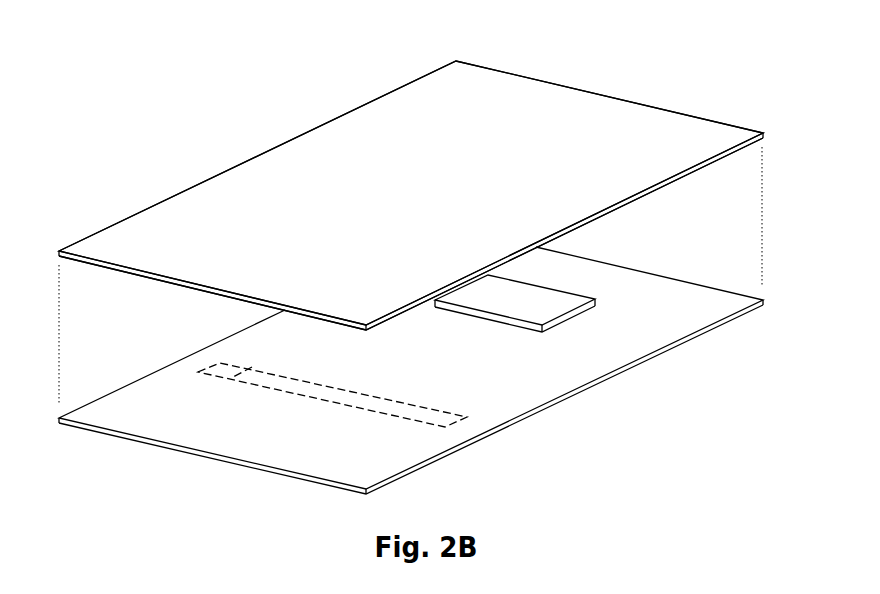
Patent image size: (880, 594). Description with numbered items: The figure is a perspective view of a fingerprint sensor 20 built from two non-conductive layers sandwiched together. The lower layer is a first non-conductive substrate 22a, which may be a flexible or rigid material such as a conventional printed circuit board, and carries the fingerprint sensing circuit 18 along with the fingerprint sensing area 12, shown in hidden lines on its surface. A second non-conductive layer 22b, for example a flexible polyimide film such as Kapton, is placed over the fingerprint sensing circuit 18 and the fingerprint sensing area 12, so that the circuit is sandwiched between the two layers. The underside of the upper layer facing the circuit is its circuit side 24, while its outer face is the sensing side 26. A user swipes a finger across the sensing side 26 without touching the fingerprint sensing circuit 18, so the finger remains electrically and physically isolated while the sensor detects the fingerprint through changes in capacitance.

The fingerprint sensor 20 is at (411, 266).
The second non-conductive layer 22b is at (147, 228).
The first non-conductive substrate 22a is at (137, 395).
The circuit side 24 is at (188, 292).
The sensing side 26 is at (253, 264).
The fingerprint sensing circuit 18 is at (515, 308).
The fingerprint sensing area 12 is at (354, 393).